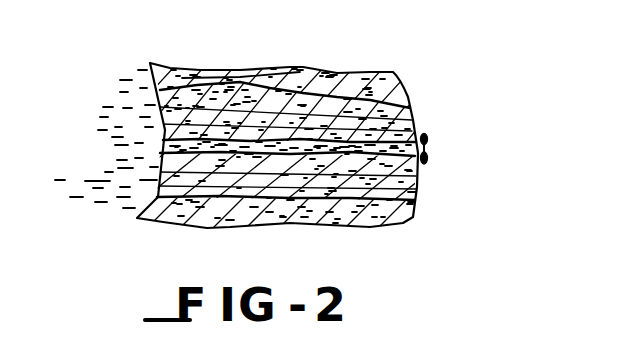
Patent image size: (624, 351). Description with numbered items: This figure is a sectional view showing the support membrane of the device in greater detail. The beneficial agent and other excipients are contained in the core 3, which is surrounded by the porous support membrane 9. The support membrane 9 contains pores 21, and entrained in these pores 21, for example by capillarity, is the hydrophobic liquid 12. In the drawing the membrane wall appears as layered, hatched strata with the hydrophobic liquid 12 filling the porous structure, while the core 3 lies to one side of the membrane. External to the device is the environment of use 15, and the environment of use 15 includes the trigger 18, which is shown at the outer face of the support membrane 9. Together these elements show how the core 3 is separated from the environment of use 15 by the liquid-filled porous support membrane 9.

The core 3 is at (102, 163).
The porous support membrane 9 is at (408, 97).
The hydrophobic liquid 12 is at (163, 142).
The environment of use 15 is at (520, 81).
The trigger 18 is at (428, 153).
The pores 21 is at (318, 130).